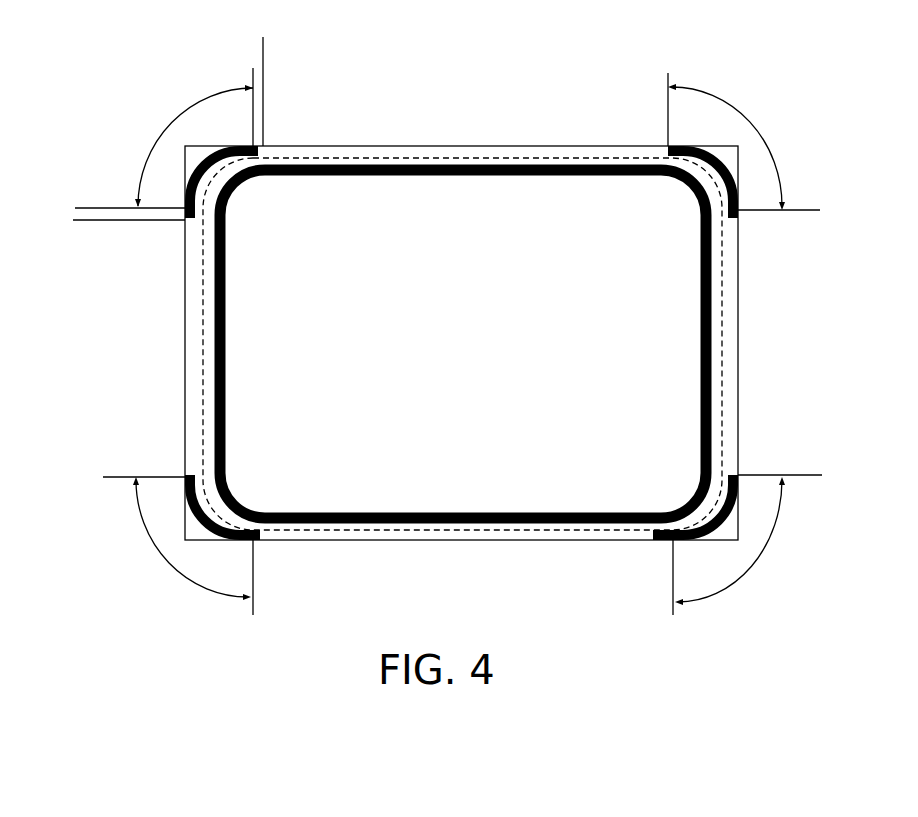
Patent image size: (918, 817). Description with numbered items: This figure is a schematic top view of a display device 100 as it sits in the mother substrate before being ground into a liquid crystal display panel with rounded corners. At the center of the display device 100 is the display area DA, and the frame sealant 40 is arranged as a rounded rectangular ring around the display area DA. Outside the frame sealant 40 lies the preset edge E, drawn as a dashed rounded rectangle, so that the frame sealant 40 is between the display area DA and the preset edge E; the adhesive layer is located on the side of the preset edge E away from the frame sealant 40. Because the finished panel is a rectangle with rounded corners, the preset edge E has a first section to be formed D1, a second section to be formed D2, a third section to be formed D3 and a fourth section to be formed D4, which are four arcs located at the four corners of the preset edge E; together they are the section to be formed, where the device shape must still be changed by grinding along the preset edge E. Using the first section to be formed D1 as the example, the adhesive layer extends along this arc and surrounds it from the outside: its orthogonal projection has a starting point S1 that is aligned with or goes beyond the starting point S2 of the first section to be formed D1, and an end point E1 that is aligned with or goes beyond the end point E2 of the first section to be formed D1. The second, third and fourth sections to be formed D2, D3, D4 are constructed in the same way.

The display device 100 is at (484, 86).
The frame sealant 40 is at (712, 355).
The display area DA is at (667, 440).
The preset edge E is at (200, 357).
The end point of the orthogonal projection of the adhesive layer E1 is at (114, 223).
The end point of the first section to be formed E2 is at (129, 198).
The starting point of the orthogonal projection of the adhesive layer S1 is at (264, 81).
The starting point of the first section to be formed S2 is at (246, 95).
The first section to be formed D1 is at (185, 146).
The second section to be formed D2 is at (178, 546).
The third section to be formed D3 is at (744, 141).
The fourth section to be formed D4 is at (747, 545).